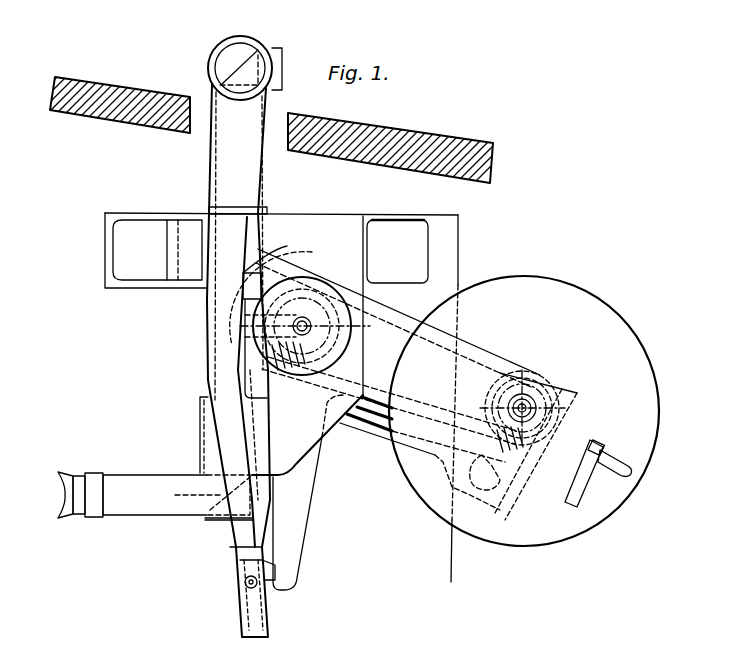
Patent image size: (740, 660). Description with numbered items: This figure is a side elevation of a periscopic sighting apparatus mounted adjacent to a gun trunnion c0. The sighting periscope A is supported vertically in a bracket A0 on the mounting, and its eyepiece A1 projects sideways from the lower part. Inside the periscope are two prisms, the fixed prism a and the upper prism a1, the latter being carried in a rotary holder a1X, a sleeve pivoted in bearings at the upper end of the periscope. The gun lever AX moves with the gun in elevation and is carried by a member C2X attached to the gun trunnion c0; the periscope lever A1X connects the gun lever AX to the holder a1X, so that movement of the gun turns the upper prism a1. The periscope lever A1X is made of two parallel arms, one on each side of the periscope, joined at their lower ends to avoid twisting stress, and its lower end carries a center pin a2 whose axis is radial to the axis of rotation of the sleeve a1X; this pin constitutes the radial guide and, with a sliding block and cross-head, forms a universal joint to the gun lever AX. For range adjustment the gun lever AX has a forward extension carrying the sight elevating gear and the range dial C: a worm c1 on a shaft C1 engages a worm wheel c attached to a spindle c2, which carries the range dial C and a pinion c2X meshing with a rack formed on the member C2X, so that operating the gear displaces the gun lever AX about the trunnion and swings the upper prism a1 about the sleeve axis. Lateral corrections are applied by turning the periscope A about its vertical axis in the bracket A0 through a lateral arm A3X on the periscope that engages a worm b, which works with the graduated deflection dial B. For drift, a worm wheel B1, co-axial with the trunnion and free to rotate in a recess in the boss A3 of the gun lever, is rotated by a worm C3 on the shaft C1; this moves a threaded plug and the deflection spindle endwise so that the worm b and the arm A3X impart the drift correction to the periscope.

The rotary holder a1X is at (233, 57).
The upper prism a1 is at (265, 49).
The sighting periscope A is at (258, 190).
The bracket A0 is at (281, 397).
The member C2X is at (377, 307).
The deflection dial B is at (315, 290).
The worm wheel B1 is at (245, 300).
The lateral arm A3X is at (250, 326).
The worm C3 is at (262, 345).
The boss of gun lever A3 is at (398, 346).
The worm b is at (360, 348).
The shaft C1 is at (373, 400).
The gun lever AX is at (300, 481).
The periscope lever A1X is at (225, 415).
The eyepiece A1 is at (110, 477).
The fixed prism a is at (187, 494).
The center pin a2 is at (250, 600).
The range dial C is at (524, 411).
The pinion c2X is at (530, 372).
The worm wheel c is at (566, 398).
The spindle c2 is at (548, 388).
The gun trunnion c0 is at (601, 452).
The worm c1 is at (528, 472).